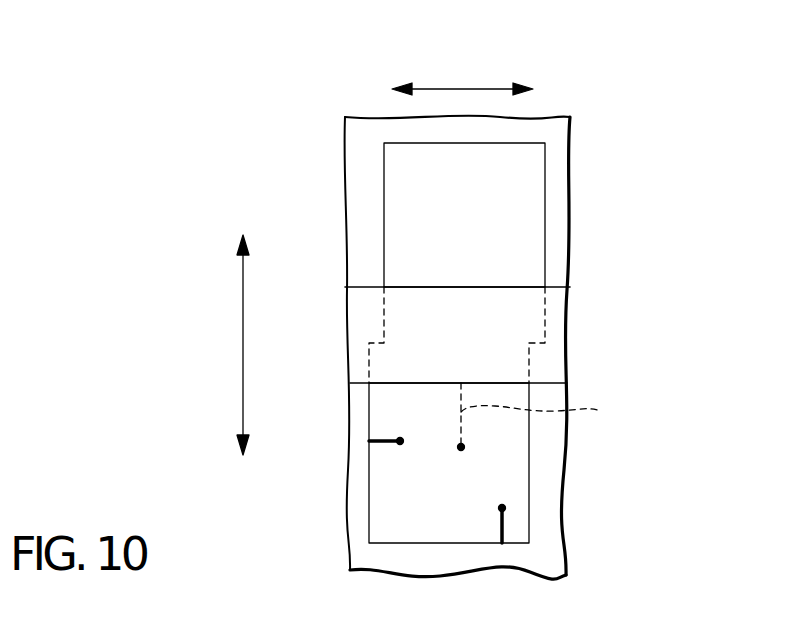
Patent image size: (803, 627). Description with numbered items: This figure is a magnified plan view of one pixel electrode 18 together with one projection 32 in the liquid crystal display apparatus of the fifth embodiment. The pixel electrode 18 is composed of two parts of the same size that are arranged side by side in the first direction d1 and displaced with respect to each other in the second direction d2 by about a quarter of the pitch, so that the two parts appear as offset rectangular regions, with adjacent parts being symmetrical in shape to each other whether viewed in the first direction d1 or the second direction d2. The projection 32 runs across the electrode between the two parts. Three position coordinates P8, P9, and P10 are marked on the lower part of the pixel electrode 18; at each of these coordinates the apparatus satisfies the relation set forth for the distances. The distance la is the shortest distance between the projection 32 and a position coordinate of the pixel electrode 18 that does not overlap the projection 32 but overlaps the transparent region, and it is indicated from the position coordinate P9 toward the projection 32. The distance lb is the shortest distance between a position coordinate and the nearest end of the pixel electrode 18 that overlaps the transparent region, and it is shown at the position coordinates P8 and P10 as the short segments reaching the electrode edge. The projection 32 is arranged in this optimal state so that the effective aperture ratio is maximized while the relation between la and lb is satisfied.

The pixel electrode 18 is at (530, 192).
The projection 32 is at (552, 307).
The shortest distance la Ia is at (540, 415).
The shortest distance lb Ib is at (386, 443).
The position coordinate P8 is at (400, 437).
The position coordinate P9 is at (460, 451).
The position coordinate P10 is at (499, 508).
The first direction d1 is at (243, 356).
The second direction d2 is at (461, 88).